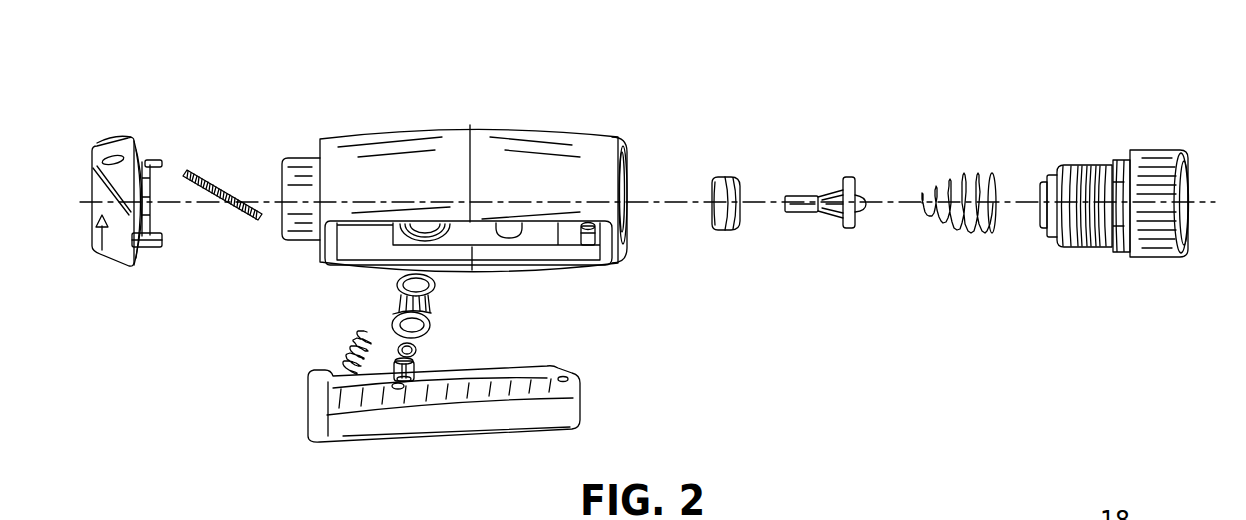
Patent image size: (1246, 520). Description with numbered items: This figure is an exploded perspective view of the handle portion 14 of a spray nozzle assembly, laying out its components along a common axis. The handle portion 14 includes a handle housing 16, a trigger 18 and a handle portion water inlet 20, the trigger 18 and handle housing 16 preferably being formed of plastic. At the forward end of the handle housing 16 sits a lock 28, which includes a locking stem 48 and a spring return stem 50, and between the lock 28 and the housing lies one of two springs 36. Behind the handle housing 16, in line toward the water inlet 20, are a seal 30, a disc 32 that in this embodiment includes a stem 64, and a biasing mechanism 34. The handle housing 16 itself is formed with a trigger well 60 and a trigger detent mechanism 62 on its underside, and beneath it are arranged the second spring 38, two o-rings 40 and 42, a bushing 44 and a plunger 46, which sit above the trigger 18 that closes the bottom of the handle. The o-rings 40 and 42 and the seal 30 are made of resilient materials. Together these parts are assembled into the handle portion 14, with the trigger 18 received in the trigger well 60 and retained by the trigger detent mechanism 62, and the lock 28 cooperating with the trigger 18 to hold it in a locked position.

The handle portion 14 is at (858, 318).
The handle housing 16 is at (418, 130).
The trigger 18 is at (582, 400).
The handle portion water inlet 20 is at (1150, 150).
The lock 28 is at (113, 138).
The seal 30 is at (724, 176).
The disc 32 is at (847, 176).
The biasing mechanism 34 is at (990, 173).
The spring 36 is at (222, 190).
The spring 38 is at (345, 358).
The o-ring 40 is at (397, 286).
The o-ring 42 is at (416, 348).
The bushing 44 is at (432, 310).
The plunger 46 is at (415, 371).
The locking stem 48 is at (152, 248).
The spring return stem 50 is at (152, 158).
The trigger well 60 is at (516, 218).
The trigger detent mechanism 62 is at (596, 232).
The stem 64 is at (798, 195).